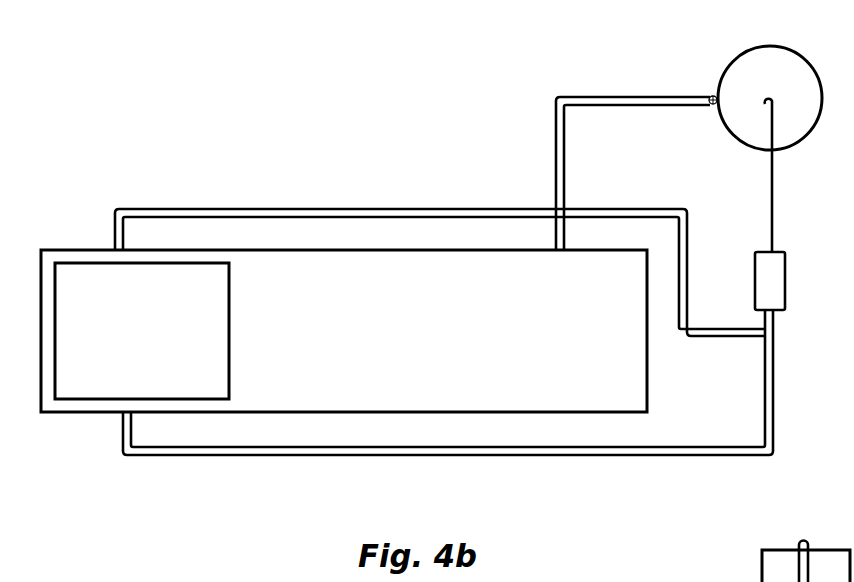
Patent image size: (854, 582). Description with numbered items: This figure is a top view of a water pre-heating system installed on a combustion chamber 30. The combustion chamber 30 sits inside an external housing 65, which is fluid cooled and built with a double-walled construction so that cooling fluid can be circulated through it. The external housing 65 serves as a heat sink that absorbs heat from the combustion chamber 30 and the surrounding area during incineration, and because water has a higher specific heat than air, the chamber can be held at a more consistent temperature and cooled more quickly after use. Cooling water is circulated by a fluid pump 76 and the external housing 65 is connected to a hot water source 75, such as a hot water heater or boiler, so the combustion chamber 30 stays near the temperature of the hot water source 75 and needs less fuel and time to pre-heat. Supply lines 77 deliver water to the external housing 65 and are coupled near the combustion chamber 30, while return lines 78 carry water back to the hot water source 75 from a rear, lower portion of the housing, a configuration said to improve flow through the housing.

The combustion chamber 30 is at (230, 367).
The external housing 65 is at (157, 250).
The hot water source 75 is at (727, 66).
The fluid pump 76 is at (786, 280).
The supply lines 77 is at (356, 209).
The return lines 78 is at (582, 96).